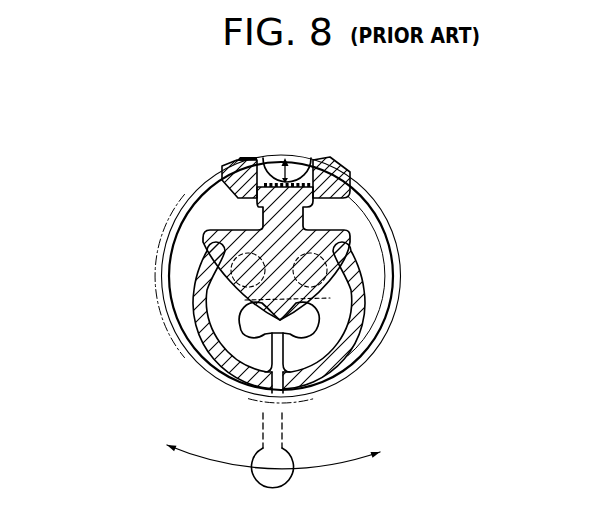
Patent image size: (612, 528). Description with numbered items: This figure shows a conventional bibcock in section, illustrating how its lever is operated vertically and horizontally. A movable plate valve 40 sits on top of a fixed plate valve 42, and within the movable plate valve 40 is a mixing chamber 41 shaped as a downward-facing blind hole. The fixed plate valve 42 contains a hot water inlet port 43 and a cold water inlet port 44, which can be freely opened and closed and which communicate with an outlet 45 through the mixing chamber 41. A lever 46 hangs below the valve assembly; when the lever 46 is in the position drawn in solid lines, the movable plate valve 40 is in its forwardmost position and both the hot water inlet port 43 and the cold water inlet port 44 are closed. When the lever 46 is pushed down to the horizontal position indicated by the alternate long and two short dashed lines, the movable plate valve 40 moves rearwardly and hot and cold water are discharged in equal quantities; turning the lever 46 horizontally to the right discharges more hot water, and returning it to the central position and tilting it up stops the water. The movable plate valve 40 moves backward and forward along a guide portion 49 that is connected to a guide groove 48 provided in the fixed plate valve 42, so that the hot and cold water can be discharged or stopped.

The movable plate valve 40 is at (360, 287).
The mixing chamber 41 is at (337, 323).
The fixed plate valve 42 is at (377, 248).
The hot water inlet port 43 is at (247, 273).
The cold water inlet port 44 is at (370, 207).
The outlet 45 is at (285, 334).
The lever 46 is at (291, 459).
The guide groove 48 is at (260, 167).
The guide portion 49 is at (330, 162).